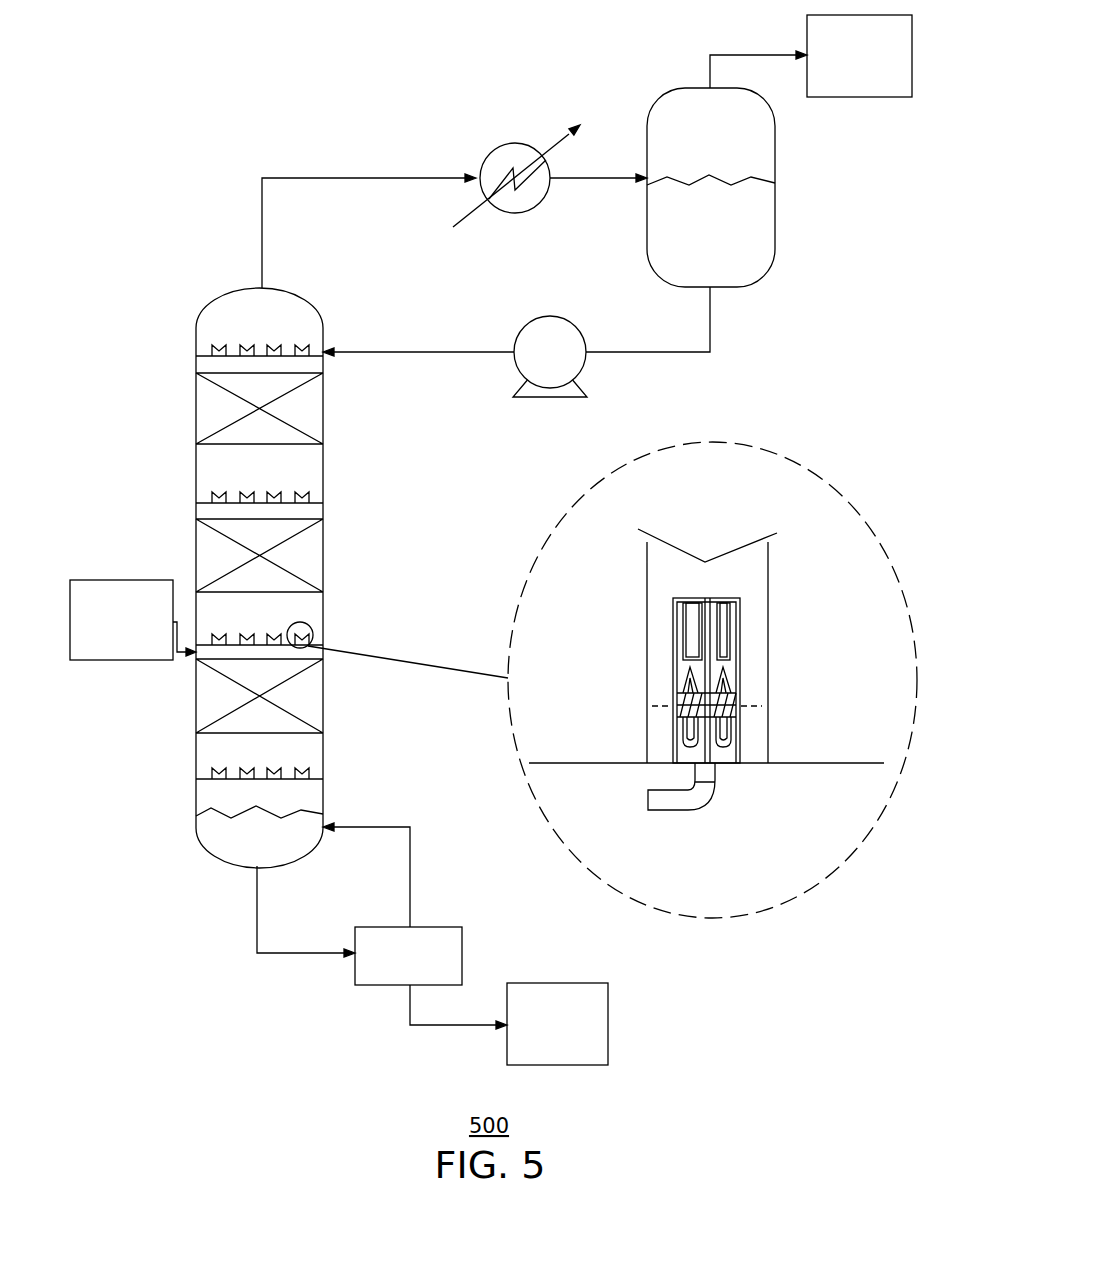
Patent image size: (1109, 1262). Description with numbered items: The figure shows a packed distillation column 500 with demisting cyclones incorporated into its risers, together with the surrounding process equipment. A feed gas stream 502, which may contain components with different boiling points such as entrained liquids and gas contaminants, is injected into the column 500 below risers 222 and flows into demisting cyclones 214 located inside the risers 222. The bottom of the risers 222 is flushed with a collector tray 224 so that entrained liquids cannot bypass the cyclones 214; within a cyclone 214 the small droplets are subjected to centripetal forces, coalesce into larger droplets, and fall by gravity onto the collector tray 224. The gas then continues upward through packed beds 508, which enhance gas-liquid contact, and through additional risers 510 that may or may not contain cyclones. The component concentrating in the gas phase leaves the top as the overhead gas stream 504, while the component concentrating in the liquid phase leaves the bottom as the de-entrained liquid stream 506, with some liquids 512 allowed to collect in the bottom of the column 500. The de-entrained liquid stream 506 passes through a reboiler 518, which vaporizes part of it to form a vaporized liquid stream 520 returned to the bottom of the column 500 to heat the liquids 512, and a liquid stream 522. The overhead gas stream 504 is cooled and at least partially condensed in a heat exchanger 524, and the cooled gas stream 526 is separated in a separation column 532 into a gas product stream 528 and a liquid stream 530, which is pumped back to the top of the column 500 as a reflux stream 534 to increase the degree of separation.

The packed distillation column 500 is at (196, 490).
The feed gas stream 502 is at (140, 665).
The overhead gas stream 504 is at (262, 228).
The de-entrained liquid stream 506 is at (257, 900).
The packed bed 508 is at (331, 373).
The additional riser 510 is at (215, 335).
The liquids 512 is at (203, 840).
The reboiler 518 is at (428, 927).
The vaporized liquid stream 520 is at (378, 827).
The liquid stream 522 is at (452, 1025).
The heat exchanger 524 is at (500, 143).
The cooled gas stream 526 is at (581, 176).
The gas product stream 528 is at (762, 52).
The liquid stream 530 is at (650, 355).
The separation column 532 is at (778, 238).
The reflux stream 534 is at (483, 353).
The riser 222 is at (318, 620).
The collector tray 224 is at (316, 636).
The demisting cyclone 214 is at (675, 706).